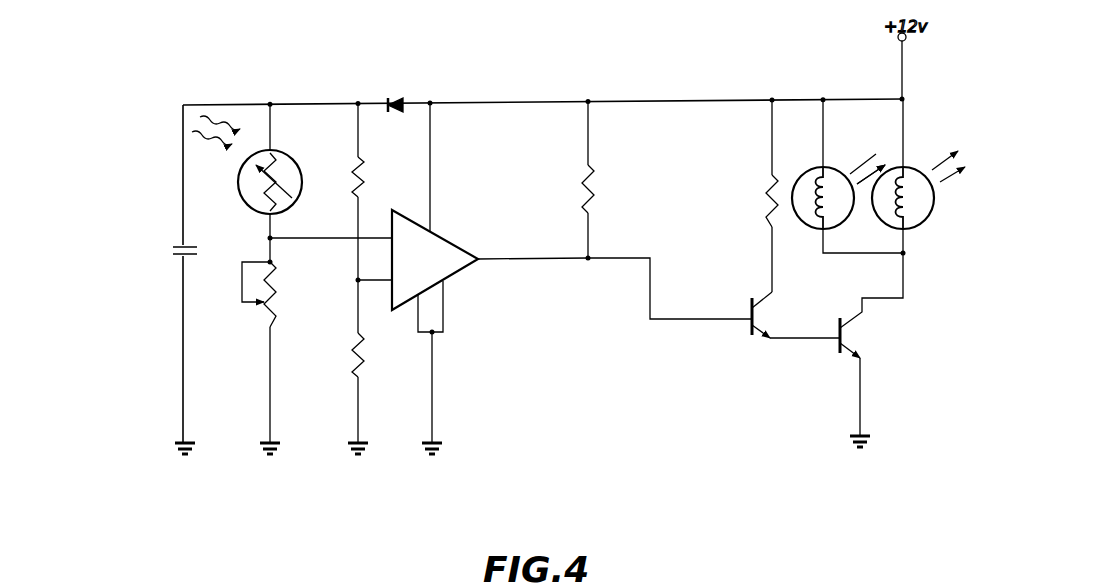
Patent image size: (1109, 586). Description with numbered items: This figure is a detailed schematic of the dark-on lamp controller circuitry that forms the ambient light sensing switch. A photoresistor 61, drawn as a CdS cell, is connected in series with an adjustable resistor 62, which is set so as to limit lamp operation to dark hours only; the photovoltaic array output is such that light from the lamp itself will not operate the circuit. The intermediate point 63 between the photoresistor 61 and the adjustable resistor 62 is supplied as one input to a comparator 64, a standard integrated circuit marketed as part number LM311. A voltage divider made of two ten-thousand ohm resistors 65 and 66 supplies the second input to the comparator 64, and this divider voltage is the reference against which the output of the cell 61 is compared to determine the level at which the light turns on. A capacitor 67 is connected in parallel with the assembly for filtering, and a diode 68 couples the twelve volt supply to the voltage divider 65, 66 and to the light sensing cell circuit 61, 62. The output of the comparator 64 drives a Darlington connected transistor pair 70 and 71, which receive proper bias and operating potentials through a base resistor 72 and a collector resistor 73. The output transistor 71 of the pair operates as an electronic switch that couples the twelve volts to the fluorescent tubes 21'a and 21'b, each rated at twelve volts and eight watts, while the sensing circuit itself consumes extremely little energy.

The photoresistor 61 is at (301, 200).
The adjustable resistor 62 is at (268, 313).
The intermediate point 63 is at (268, 238).
The comparator 64 is at (448, 240).
The 10,000 ohm resistor 65 is at (359, 152).
The 10,000 ohm resistor 66 is at (364, 375).
The capacitor 67 is at (185, 262).
The diode 68 is at (386, 100).
The transistor 70 is at (750, 337).
The output transistor 71 is at (838, 352).
The base resistor 72 is at (587, 212).
The collector resistor 73 is at (771, 224).
The fluorescent tube 21'a is at (847, 176).
The fluorescent tube 21'b is at (918, 176).